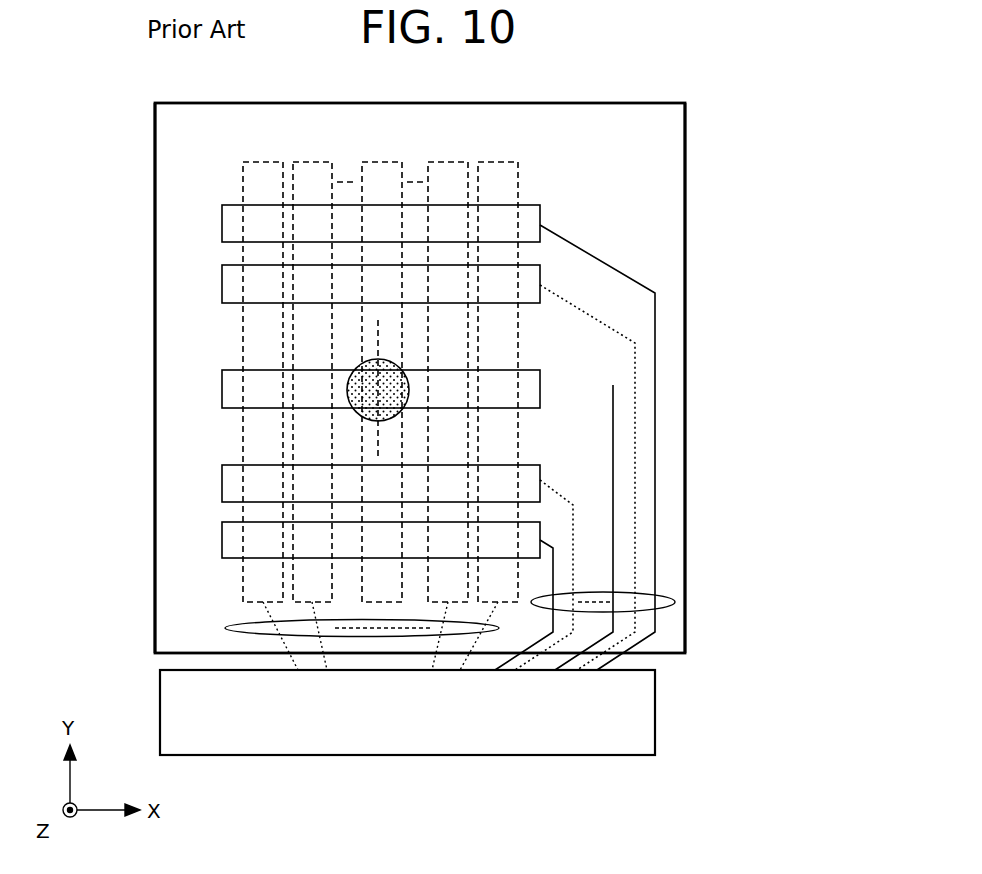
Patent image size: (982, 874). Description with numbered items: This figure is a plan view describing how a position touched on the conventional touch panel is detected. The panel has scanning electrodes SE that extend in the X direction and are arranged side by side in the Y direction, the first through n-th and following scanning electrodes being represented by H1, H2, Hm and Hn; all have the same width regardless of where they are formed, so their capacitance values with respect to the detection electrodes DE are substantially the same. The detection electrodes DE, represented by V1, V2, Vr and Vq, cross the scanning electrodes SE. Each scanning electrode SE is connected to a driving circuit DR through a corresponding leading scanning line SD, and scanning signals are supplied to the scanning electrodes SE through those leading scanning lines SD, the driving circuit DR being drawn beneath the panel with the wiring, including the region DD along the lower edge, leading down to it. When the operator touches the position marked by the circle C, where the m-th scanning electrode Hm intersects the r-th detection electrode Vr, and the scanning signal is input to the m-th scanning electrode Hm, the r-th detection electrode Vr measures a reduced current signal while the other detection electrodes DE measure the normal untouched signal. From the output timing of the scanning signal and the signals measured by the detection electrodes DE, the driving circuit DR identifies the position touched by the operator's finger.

The driving circuit DR is at (407, 712).
The first detection electrode V1 is at (263, 382).
The second detection electrode V2 is at (312, 382).
The r-th detection electrode Vr is at (382, 382).
The q-th detection electrode Vq is at (448, 382).
The first scanning electrode H1 is at (418, 437).
The second scanning electrode H2 is at (408, 467).
The m-th scanning electrode Hm is at (395, 520).
The n-th scanning electrode Hn is at (376, 567).
The touched position C is at (418, 387).
The detection electrode DE is at (535, 197).
The scanning electrode SE is at (168, 389).
The leading scanning line SD is at (662, 595).
The bottom wiring region DD is at (247, 628).